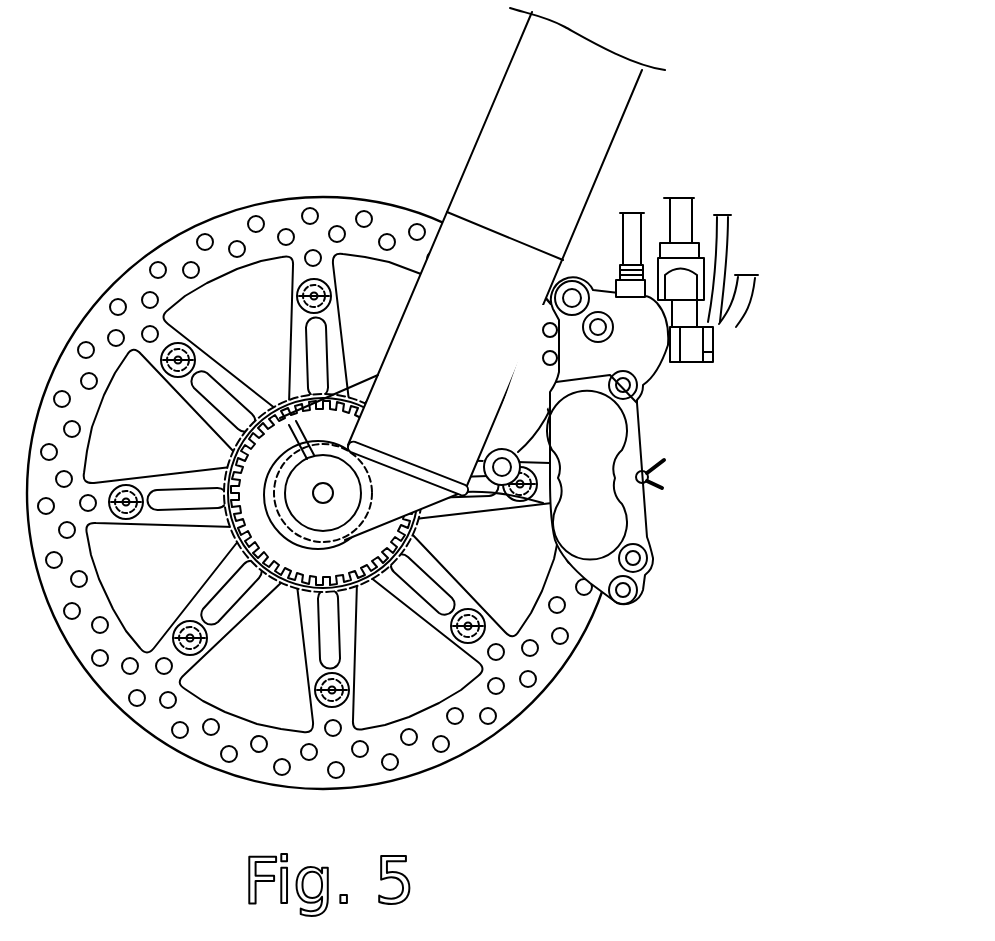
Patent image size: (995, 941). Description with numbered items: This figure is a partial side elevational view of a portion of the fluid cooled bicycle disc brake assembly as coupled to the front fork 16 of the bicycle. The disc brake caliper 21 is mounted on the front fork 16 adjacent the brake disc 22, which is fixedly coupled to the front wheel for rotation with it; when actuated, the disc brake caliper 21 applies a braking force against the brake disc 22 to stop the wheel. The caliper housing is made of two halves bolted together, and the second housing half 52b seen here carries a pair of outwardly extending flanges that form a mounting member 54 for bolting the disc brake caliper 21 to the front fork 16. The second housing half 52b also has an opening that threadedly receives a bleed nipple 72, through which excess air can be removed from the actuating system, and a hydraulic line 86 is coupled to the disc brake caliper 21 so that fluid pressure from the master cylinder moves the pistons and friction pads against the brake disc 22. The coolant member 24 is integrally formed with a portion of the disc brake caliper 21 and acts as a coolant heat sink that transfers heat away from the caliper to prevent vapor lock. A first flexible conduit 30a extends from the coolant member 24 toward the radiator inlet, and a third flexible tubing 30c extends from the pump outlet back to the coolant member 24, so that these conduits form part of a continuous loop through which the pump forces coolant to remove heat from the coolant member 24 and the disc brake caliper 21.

The front fork 16 is at (493, 105).
The disc brake caliper 21 is at (654, 431).
The brake disc 22 is at (133, 262).
The coolant member 24 is at (652, 364).
The first flexible conduit 30a is at (590, 268).
The third flexible tubing 30c is at (748, 298).
The second housing half 52b is at (630, 490).
The mounting member 54 is at (513, 440).
The bleed nipple 72 is at (582, 250).
The hydraulic line 86 is at (693, 208).